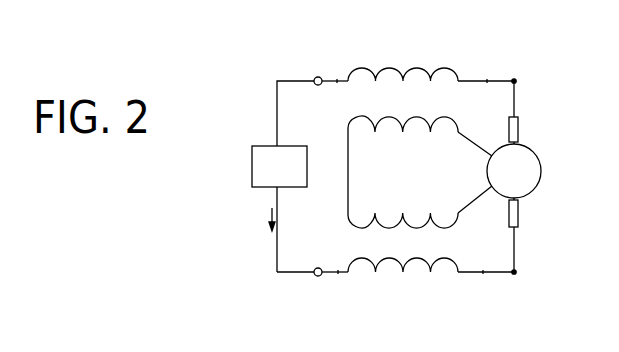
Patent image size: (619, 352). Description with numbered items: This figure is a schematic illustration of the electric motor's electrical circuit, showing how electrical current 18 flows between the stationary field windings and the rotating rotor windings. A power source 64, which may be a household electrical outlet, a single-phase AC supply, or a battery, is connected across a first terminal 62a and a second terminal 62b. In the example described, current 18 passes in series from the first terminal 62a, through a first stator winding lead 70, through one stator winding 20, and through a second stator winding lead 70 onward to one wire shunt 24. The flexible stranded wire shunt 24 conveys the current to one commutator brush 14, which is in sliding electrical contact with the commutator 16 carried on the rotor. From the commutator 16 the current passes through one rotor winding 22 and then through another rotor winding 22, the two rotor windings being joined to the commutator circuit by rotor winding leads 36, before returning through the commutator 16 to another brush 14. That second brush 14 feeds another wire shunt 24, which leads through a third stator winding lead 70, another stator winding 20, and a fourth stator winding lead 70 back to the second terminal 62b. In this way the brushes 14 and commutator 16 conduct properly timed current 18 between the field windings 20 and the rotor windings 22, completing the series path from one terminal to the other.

The commutator brush 14 is at (519, 138).
The commutator 16 is at (542, 169).
The electrical current 18 is at (268, 218).
The field winding 20 is at (415, 68).
The rotor winding 22 is at (390, 223).
The wire shunt 24 is at (515, 100).
The rotor winding lead 36 is at (468, 139).
The first terminal 62a is at (314, 78).
The second terminal 62b is at (316, 276).
The power source 64 is at (252, 165).
The stator winding lead 70 is at (337, 81).